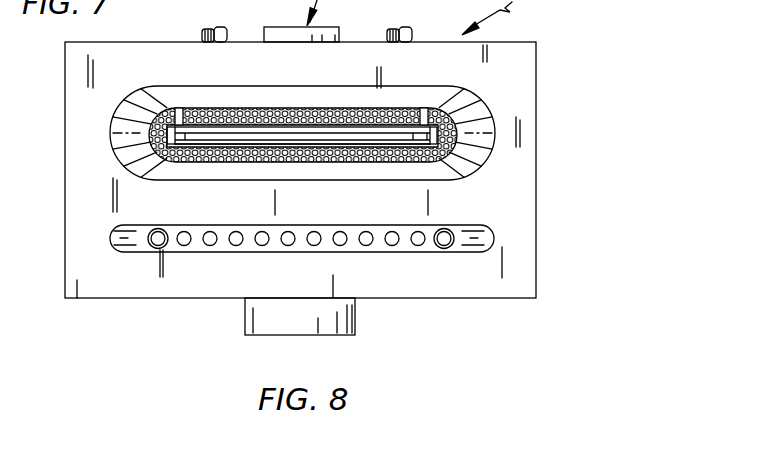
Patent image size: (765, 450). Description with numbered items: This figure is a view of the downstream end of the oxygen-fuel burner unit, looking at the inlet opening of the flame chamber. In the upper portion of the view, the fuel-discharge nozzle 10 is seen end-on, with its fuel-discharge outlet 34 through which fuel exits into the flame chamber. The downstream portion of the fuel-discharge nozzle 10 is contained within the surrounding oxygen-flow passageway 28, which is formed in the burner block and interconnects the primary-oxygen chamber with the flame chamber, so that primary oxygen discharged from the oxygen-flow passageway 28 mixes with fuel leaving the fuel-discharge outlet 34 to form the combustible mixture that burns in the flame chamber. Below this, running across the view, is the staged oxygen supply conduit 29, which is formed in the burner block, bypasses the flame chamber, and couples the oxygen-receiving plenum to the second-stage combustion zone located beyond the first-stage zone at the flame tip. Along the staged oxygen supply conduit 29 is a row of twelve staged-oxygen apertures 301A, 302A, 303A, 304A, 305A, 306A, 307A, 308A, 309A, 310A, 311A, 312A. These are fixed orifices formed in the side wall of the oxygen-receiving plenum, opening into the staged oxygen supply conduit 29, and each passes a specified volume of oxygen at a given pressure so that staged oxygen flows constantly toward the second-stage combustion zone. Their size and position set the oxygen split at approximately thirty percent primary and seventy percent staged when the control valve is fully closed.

The fuel-discharge nozzle 10 is at (274, 112).
The fuel-discharge outlet 34 is at (291, 115).
The oxygen-flow passageway 28 is at (425, 95).
The staged oxygen supply conduit 29 is at (150, 205).
The staged-oxygen aperture 301A is at (155, 247).
The staged-oxygen aperture 302A is at (184, 247).
The staged-oxygen aperture 303A is at (210, 231).
The staged-oxygen aperture 304A is at (236, 247).
The staged-oxygen aperture 305A is at (262, 231).
The staged-oxygen aperture 306A is at (290, 247).
The staged-oxygen aperture 307A is at (314, 231).
The staged-oxygen aperture 308A is at (342, 247).
The staged-oxygen aperture 309A is at (368, 231).
The staged-oxygen aperture 310A is at (394, 247).
The staged-oxygen aperture 311A is at (424, 230).
The staged-oxygen aperture 312A is at (450, 247).